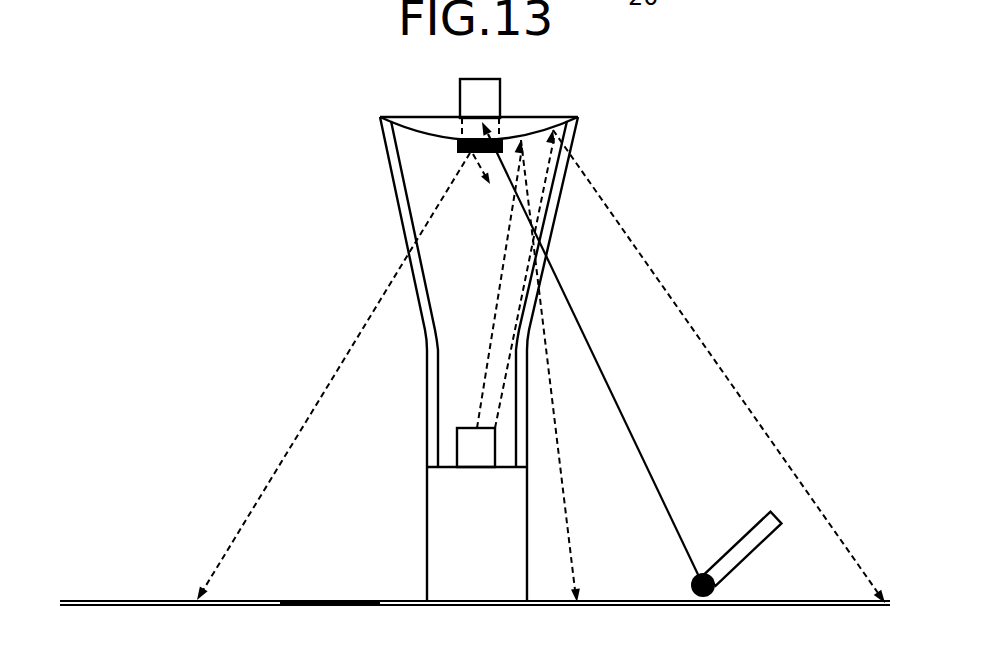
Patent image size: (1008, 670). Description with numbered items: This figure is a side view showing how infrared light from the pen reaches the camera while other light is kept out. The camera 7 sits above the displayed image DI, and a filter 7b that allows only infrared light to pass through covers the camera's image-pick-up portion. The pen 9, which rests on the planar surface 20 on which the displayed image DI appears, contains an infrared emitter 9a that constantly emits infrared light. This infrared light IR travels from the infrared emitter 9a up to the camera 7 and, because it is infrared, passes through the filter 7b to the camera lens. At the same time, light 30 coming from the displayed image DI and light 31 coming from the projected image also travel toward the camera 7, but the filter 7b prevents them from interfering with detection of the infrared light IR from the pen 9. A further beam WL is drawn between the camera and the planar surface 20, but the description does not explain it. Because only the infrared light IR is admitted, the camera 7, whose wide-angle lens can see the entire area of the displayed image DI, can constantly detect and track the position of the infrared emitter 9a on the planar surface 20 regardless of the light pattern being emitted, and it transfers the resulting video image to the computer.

The camera 7 is at (500, 95).
The filter 7b is at (457, 143).
The light from the displayed image 30 is at (327, 385).
The light from the projected image 31 is at (667, 290).
The white light beam WL is at (564, 487).
The infrared light IR is at (617, 406).
The pen 9 is at (738, 538).
The infrared emitter 9a is at (692, 578).
The planar surface 20 is at (598, 607).
The displayed image DI is at (340, 600).